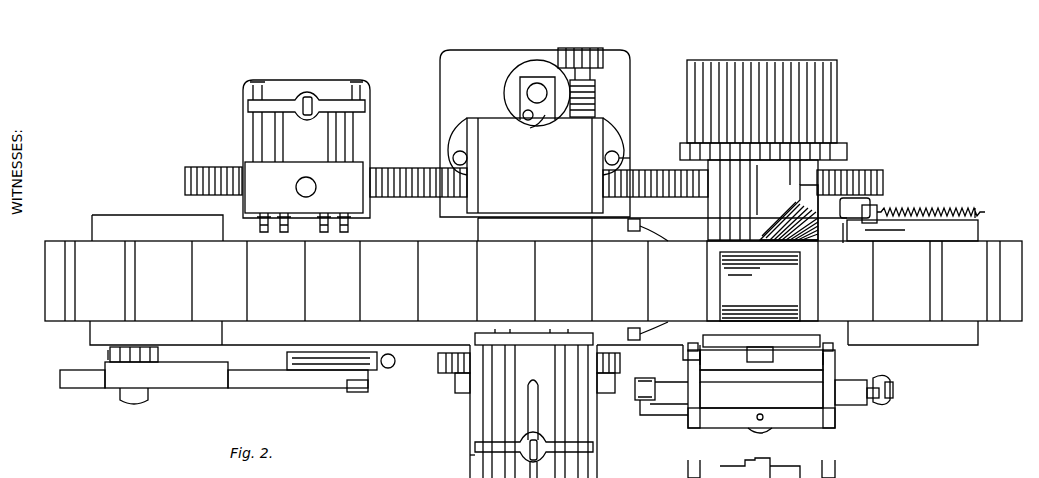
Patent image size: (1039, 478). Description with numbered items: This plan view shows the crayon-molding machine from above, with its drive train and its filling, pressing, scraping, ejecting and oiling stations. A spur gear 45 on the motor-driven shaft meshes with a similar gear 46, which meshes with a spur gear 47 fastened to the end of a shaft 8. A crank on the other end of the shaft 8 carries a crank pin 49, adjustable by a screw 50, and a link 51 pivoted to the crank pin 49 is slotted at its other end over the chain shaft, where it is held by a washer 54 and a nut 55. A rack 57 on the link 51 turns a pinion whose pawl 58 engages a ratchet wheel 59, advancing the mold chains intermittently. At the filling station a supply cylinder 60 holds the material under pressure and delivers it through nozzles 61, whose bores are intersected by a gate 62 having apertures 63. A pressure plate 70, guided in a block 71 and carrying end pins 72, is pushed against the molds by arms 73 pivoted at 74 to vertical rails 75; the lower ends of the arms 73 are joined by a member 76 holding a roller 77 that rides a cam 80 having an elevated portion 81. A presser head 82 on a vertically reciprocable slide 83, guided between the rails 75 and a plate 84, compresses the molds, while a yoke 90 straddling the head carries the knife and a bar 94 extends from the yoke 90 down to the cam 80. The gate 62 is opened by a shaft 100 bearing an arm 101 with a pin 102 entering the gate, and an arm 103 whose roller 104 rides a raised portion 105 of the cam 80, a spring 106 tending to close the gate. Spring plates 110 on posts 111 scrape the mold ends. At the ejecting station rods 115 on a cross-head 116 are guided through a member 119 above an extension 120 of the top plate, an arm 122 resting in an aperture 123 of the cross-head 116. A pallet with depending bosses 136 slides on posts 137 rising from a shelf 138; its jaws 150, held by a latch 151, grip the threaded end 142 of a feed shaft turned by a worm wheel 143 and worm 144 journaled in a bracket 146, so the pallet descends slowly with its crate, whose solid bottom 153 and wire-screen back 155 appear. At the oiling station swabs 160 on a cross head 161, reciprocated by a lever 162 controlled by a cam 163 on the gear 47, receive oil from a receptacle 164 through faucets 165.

The shaft 8 is at (300, 374).
The spur gear 45 is at (875, 178).
The gear 46 is at (430, 165).
The spur gear 47 is at (184, 179).
The crank pin 49 is at (368, 390).
The screw 50 is at (437, 358).
The link 51 is at (262, 378).
The washer 54 is at (112, 388).
The nut 55 is at (133, 403).
The rack 57 is at (178, 366).
The pawl 58 is at (140, 355).
The ratchet wheel 59 is at (108, 354).
The supply cylinder 60 is at (835, 98).
The nozzles 61 is at (710, 200).
The gate 62 is at (839, 244).
The apertures 63 is at (790, 243).
The pressure plate 70 is at (692, 345).
The block 71 is at (855, 340).
The pin 72 is at (688, 350).
The arms 73 is at (720, 392).
The pivot 74 is at (640, 385).
The vertical rails 75 is at (705, 370).
The member 76 is at (730, 420).
The anti-friction roller 77 is at (760, 430).
The cam 80 is at (685, 395).
The elevated portion 81 is at (660, 410).
The presser head 82 is at (815, 298).
The slide 83 is at (792, 372).
The plate 84 is at (762, 383).
The yoke 90 is at (745, 338).
The bar 94 is at (773, 350).
The shaft 100 is at (850, 408).
The arm 101 is at (870, 206).
The pin 102 is at (880, 236).
The arm 103 is at (872, 400).
The roller 104 is at (895, 389).
The raised portion 105 is at (650, 405).
The spring 106 is at (931, 202).
The spring plates 110 is at (646, 286).
The posts 111 is at (628, 228).
The rods 115 is at (510, 405).
The cross-head 116 is at (593, 450).
The member 119 is at (475, 336).
The extension 120 is at (478, 465).
The arm 122 is at (538, 450).
The aperture 123 is at (525, 464).
The depending boss 136 is at (643, 155).
The posts 137 is at (455, 152).
The shelf 138 is at (445, 90).
The threaded end 142 is at (523, 113).
The worm wheel 143 is at (518, 84).
The worm 144 is at (597, 100).
The bracket 146 is at (604, 55).
The jaws 150 is at (527, 93).
The latch 151 is at (525, 68).
The solid bottom 153 is at (535, 165).
The back 155 is at (518, 132).
The swabs or brushes 160 is at (282, 235).
The cross head 161 is at (268, 103).
The lever 162 is at (312, 100).
The cam 163 is at (243, 162).
The receptacle 164 is at (304, 187).
The faucets 165 is at (343, 235).